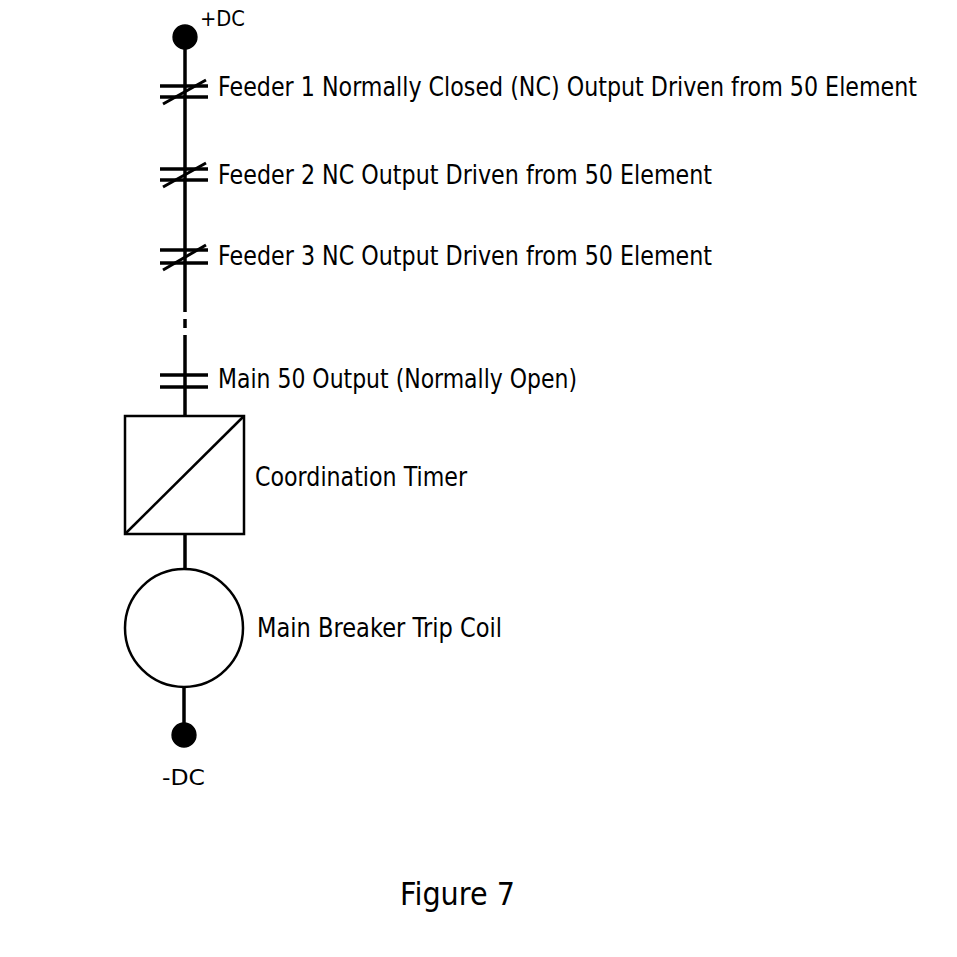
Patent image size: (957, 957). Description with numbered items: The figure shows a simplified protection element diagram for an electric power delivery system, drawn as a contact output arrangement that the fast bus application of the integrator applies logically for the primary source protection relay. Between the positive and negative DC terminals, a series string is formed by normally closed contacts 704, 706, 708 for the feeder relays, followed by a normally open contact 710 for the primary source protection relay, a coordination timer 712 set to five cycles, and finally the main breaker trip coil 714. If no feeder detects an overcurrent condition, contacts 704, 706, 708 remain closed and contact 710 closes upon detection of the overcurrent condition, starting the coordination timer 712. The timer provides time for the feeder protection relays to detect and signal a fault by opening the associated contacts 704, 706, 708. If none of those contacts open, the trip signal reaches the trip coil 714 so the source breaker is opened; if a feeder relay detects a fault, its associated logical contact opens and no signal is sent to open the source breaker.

The normally closed contact 704 is at (160, 90).
The normally closed contact 706 is at (160, 173).
The normally closed contact 708 is at (160, 255).
The normally open contact 710 is at (160, 378).
The coordination timer 712 is at (125, 478).
The Main breaker trip coil 714 is at (125, 632).